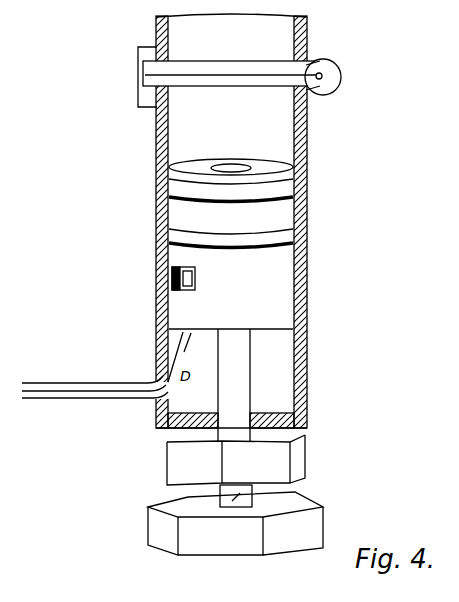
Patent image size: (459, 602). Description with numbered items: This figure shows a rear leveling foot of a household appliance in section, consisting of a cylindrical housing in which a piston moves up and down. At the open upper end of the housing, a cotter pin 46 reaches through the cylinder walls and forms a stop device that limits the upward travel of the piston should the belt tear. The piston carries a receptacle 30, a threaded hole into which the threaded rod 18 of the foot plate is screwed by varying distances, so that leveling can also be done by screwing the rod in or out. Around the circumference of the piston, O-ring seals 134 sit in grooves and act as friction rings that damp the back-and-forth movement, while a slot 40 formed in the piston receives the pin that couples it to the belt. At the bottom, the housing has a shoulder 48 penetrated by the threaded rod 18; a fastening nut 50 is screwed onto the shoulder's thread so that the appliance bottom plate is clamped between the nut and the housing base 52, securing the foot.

The cotter pin 46 is at (330, 57).
The receptacle 30 is at (250, 160).
The O-ring seals 134 is at (286, 192).
The slot 40 is at (165, 273).
The threaded rod 18 is at (240, 363).
The housing base 52 is at (168, 435).
The shoulder 48 is at (228, 462).
The fastening nut 50 is at (306, 463).